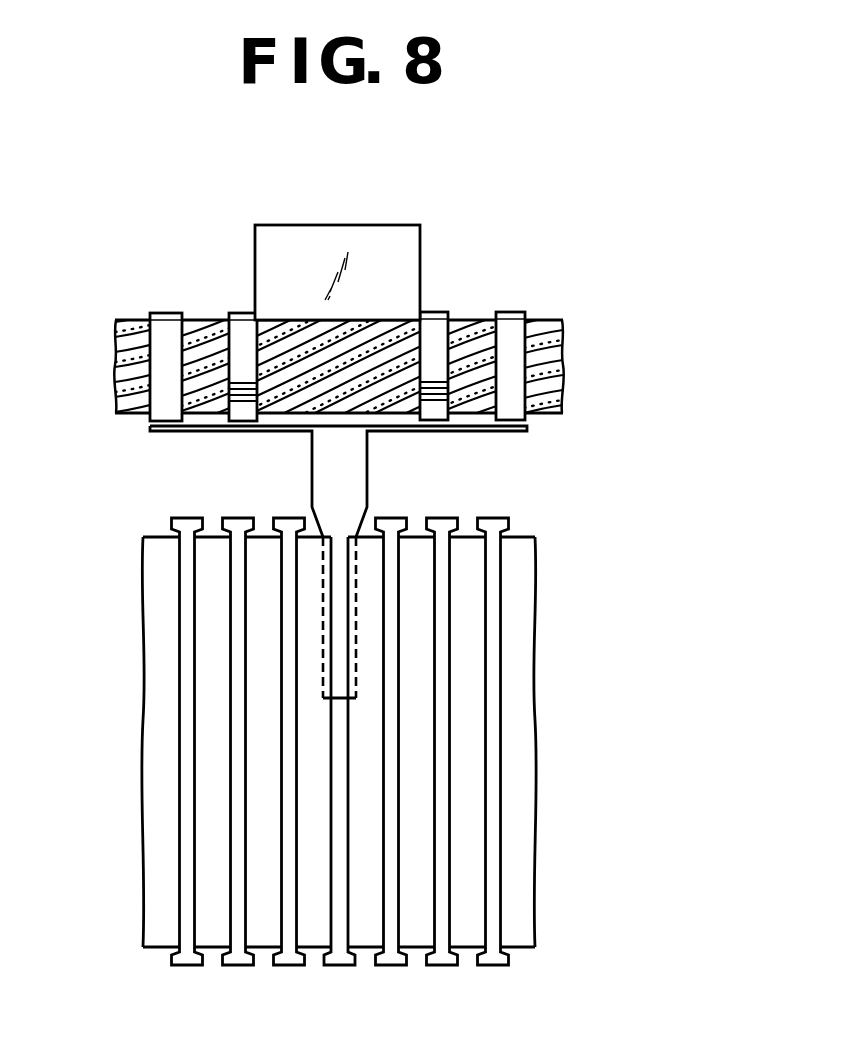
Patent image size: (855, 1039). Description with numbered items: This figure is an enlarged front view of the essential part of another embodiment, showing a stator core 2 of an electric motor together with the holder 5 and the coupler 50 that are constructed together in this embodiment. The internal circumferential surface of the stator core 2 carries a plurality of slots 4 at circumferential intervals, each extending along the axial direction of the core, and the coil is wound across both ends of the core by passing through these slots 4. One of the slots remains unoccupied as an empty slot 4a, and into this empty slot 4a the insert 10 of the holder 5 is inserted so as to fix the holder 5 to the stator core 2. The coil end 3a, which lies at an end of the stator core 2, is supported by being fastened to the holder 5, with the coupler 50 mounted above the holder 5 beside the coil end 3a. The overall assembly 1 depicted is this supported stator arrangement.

The electrostatic recording head 1 is at (130, 500).
The stator core 2 is at (372, 920).
The coil end 3a is at (533, 322).
The slots 4 is at (192, 898).
The empty slot 4a is at (338, 897).
The holder 5 is at (372, 455).
The insert 10 is at (350, 488).
The coupler 50 is at (407, 265).